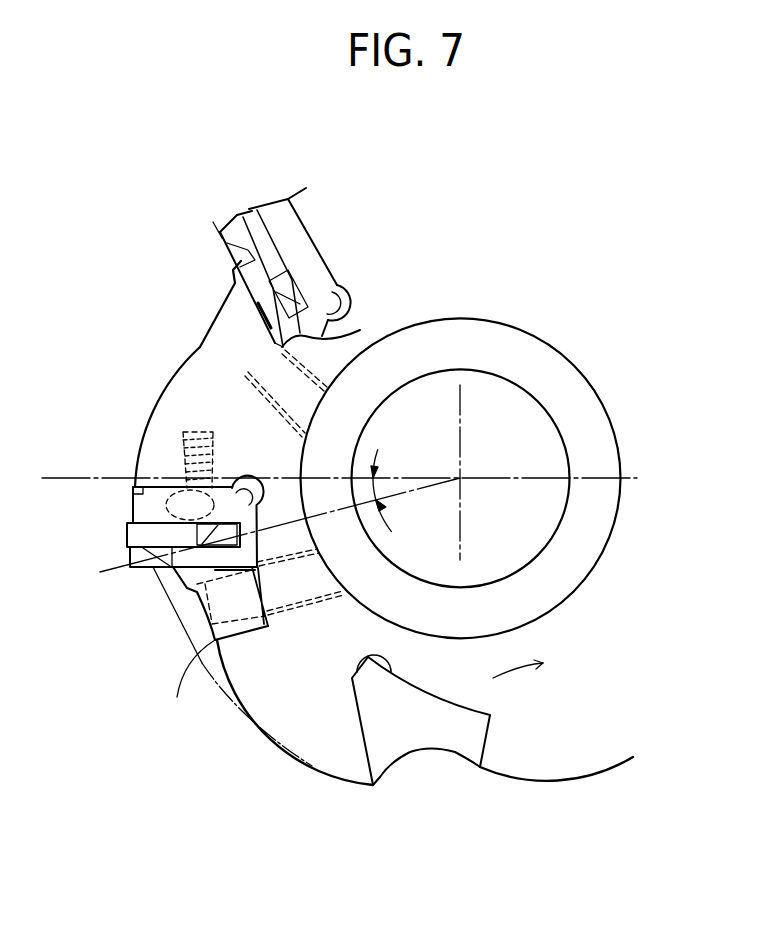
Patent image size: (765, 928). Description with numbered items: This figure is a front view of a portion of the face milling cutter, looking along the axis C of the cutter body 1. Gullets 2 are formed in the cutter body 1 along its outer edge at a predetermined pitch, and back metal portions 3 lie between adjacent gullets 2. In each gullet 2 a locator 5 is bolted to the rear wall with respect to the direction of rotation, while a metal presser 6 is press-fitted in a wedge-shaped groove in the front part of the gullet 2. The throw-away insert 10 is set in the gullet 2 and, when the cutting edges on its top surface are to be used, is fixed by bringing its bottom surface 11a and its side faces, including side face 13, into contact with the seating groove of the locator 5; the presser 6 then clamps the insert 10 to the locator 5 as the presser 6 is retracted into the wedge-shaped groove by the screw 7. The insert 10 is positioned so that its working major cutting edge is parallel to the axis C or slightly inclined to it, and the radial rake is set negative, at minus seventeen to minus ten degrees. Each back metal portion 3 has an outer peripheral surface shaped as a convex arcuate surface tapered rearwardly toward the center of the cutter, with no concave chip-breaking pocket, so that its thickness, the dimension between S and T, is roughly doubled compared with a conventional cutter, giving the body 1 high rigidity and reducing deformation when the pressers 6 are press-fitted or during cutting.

The cutter body 1 is at (580, 747).
The gullet 2 is at (142, 488).
The back metal portion 3 is at (295, 688).
The locator 5 is at (145, 508).
The metal presser 6 is at (207, 612).
The wedge-shaped groove screw 7 is at (197, 590).
The throw-away insert 10 is at (122, 549).
The bottom surface 11a is at (288, 198).
The side face 13 is at (360, 330).
The axis of the cutter C is at (460, 478).
The back metal thickness reference point T is at (188, 688).
The back metal thickness reference point S is at (310, 767).